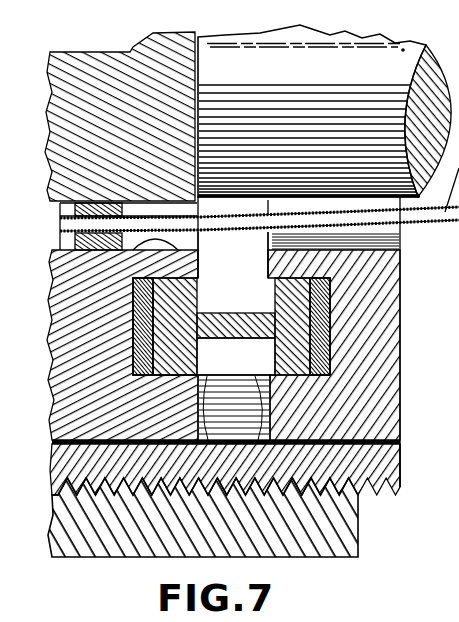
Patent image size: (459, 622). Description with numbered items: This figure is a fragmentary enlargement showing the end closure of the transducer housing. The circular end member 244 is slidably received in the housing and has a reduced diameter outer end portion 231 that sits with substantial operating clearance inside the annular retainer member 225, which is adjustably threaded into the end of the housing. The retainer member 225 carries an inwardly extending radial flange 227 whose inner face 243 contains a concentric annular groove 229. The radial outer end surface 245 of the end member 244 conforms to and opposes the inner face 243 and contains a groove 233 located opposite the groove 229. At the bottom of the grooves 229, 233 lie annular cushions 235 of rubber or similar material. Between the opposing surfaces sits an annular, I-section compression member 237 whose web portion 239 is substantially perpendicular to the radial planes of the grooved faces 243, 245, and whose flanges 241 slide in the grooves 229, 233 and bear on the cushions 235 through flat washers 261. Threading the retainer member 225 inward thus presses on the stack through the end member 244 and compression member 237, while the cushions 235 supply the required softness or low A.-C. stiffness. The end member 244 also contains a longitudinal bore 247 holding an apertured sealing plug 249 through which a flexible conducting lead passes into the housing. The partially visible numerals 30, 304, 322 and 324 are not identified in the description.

The end member 244 is at (132, 82).
The apertured sealing plug 249 is at (92, 246).
The longitudinal bore 247 is at (52, 311).
The radial flange 227 is at (380, 283).
The annular web portion 239 is at (230, 322).
The annular cushion 235 is at (134, 353).
The annular groove 229 is at (328, 350).
The flat washer 261 is at (58, 345).
The compression member 237 is at (243, 312).
The flange 241 is at (280, 347).
The groove 233 is at (135, 383).
The reduced diameter outer end portion 231 is at (145, 418).
The inner face 243 is at (250, 446).
The outer end surface 245 is at (225, 469).
The member 30 is at (458, 352).
The member 304 is at (458, 418).
The annular retainer member 225 is at (402, 468).
The member 322 is at (458, 530).
The member 324 is at (458, 583).